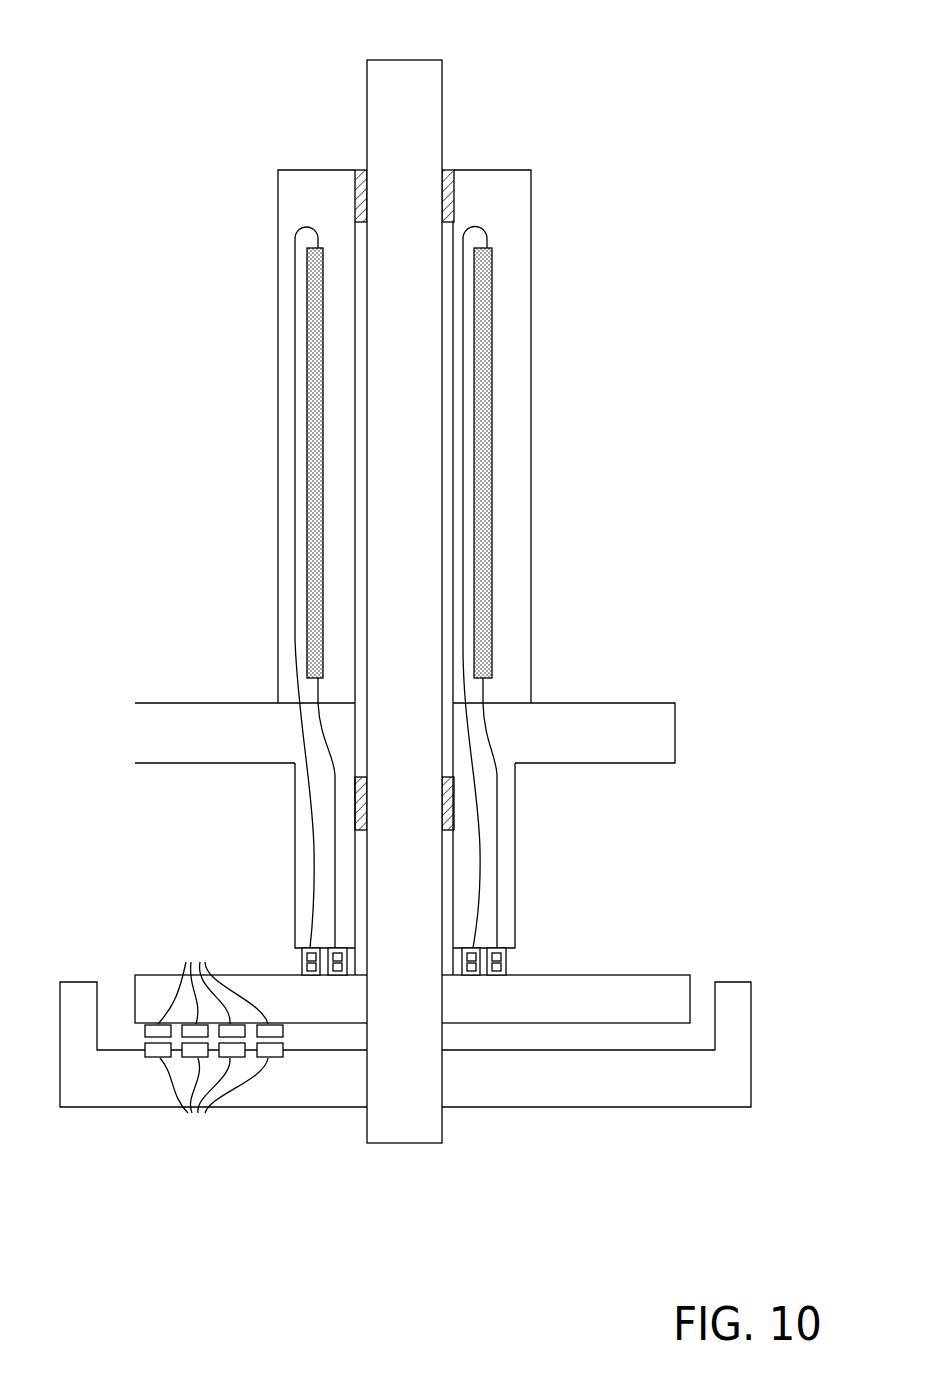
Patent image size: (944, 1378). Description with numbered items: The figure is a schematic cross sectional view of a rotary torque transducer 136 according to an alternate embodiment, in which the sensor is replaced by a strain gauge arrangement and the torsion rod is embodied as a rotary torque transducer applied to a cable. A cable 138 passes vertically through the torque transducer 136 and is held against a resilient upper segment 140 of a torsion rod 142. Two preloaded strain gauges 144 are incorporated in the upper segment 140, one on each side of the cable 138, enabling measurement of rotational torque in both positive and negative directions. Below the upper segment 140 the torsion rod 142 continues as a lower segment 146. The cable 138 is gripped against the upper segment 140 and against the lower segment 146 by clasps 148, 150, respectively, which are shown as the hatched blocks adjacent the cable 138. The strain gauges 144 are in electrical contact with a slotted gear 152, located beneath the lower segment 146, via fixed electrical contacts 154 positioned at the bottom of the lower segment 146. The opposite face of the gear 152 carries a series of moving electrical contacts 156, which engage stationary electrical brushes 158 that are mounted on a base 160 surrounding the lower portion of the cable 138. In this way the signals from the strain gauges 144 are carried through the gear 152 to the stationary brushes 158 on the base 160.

The rotary torque transducer 136 is at (116, 71).
The cable 138 is at (367, 75).
The upper segment 140 is at (276, 255).
The torsion rod 142 is at (587, 661).
The strain gauges 144 is at (307, 410).
The lower segment 146 is at (295, 878).
The clasp 148 is at (362, 170).
The clasp 150 is at (361, 803).
The slotted gear 152 is at (665, 975).
The fixed electrical contacts 154 is at (302, 960).
The moving electrical contacts 156 is at (214, 985).
The stationary electrical brushes 158 is at (214, 1095).
The base 160 is at (751, 1040).